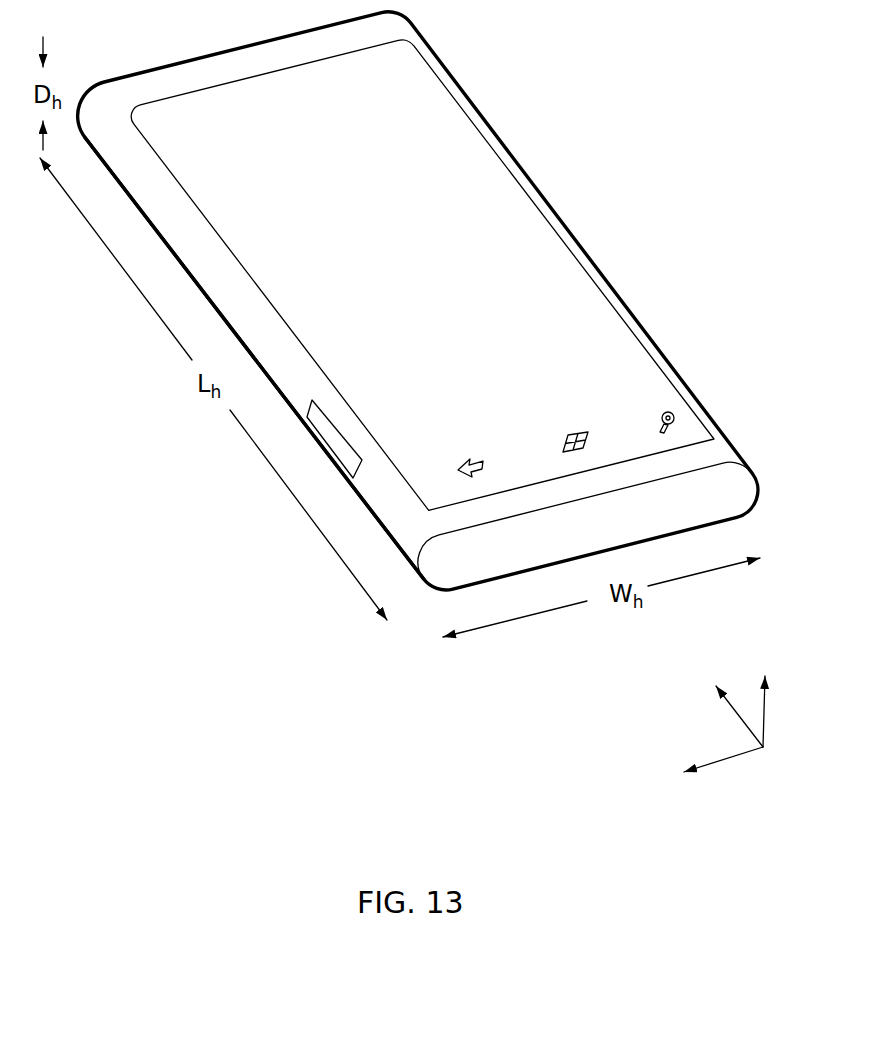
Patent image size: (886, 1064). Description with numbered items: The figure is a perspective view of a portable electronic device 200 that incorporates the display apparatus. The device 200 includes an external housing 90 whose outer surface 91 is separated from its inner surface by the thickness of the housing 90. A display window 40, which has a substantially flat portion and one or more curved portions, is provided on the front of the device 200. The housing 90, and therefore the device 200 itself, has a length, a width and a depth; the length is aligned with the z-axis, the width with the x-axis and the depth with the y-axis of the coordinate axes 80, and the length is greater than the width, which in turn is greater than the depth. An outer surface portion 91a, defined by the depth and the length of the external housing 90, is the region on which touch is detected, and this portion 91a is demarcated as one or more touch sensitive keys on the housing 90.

The display window 40 is at (542, 228).
The coordinate system 80 is at (727, 782).
The external housing 90 is at (768, 498).
The outer surface 91 is at (412, 542).
The outer surface portion 91a is at (343, 455).
The portable electronic device 200 is at (457, 404).